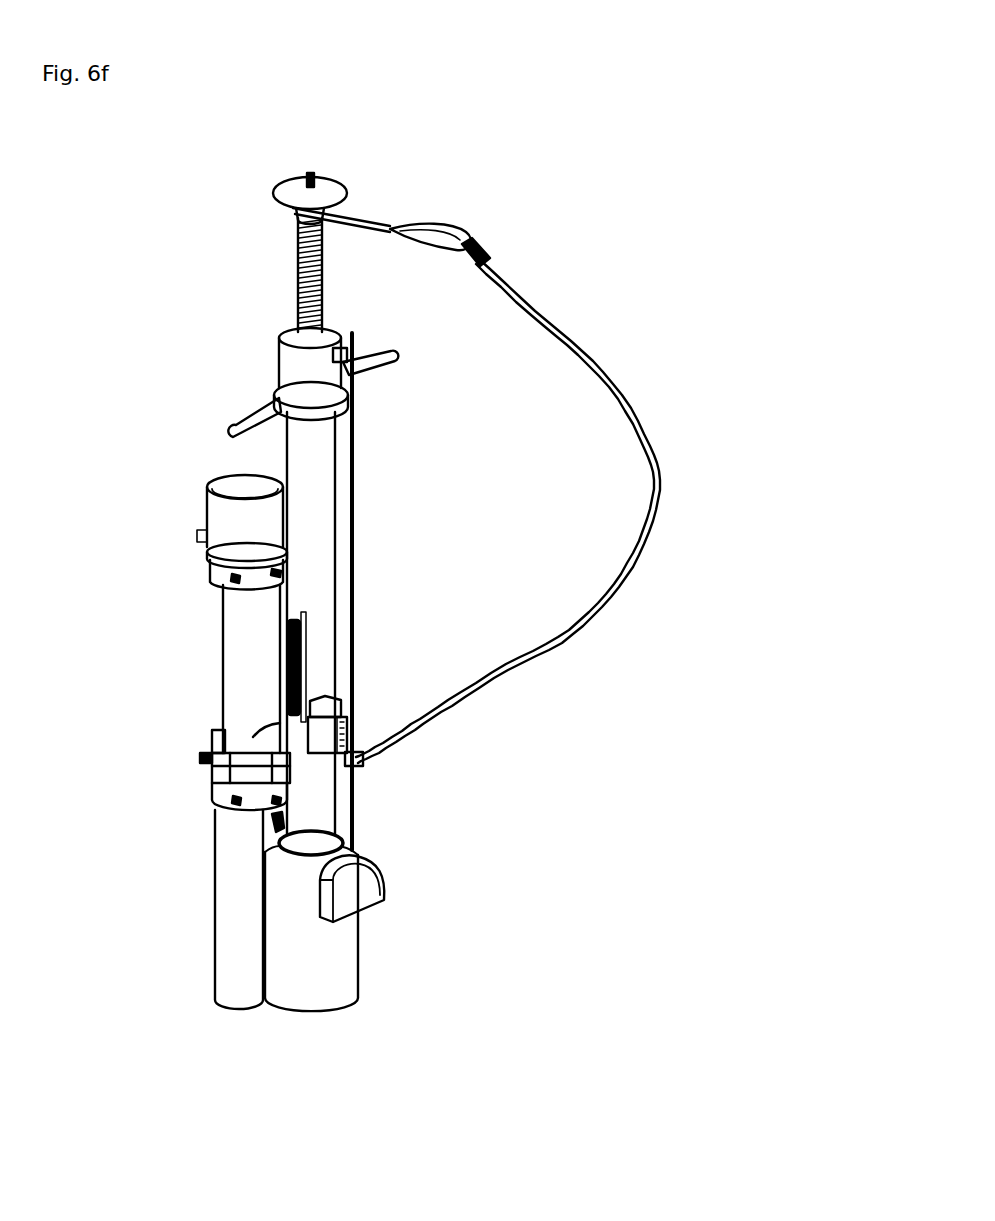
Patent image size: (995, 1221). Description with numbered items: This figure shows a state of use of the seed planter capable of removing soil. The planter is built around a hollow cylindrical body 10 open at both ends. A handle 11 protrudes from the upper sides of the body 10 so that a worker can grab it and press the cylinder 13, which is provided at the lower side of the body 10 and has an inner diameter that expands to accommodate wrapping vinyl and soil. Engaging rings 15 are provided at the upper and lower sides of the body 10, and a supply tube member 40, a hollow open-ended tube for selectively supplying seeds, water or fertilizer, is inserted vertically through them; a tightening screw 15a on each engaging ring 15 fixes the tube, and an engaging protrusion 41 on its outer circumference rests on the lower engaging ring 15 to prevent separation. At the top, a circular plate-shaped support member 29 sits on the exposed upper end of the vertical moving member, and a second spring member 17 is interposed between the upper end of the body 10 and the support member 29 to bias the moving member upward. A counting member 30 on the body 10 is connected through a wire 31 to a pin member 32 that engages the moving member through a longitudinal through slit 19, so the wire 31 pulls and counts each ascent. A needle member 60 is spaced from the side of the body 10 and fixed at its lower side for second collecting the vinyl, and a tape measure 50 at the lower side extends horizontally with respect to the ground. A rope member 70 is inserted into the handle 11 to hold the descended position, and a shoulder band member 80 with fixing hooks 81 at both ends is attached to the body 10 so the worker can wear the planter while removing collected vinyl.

The body 10 is at (316, 468).
The handle 11 is at (393, 359).
The cylinder 13 is at (337, 973).
The engaging ring 15 is at (223, 783).
The tightening screw 15a is at (232, 578).
The second spring member 17 is at (324, 273).
The through slit 19 is at (307, 636).
The support member 29 is at (330, 178).
The counting member 30 is at (357, 723).
The wire 31 is at (320, 703).
The pin member 32 is at (302, 683).
The supply tube member 40 is at (362, 753).
The engaging protrusion 41 is at (278, 783).
The tape measure 50 is at (367, 883).
The needle member 60 is at (353, 544).
The rope member 70 is at (443, 230).
The shoulder band member 80 is at (653, 480).
The fixing hook 81 is at (483, 262).